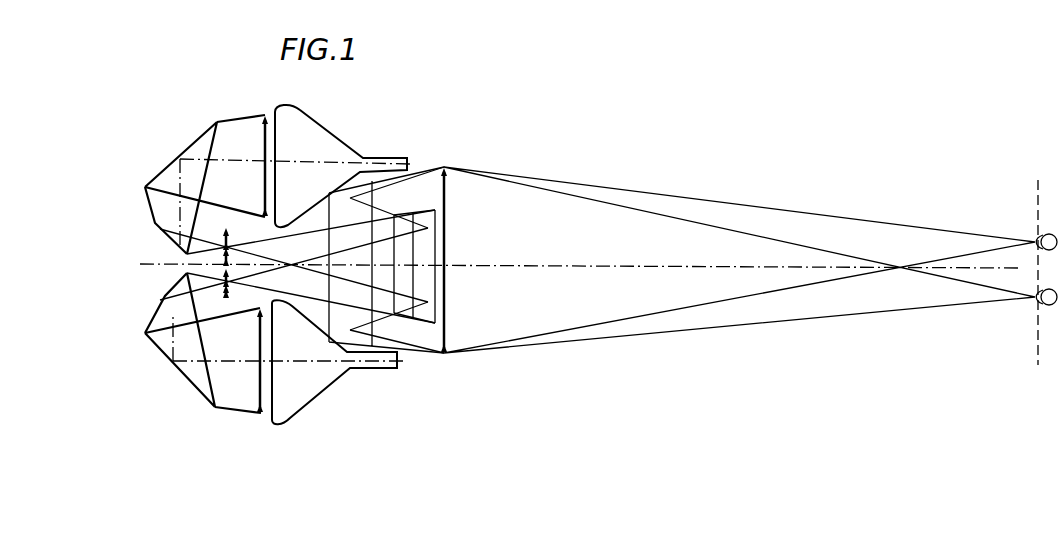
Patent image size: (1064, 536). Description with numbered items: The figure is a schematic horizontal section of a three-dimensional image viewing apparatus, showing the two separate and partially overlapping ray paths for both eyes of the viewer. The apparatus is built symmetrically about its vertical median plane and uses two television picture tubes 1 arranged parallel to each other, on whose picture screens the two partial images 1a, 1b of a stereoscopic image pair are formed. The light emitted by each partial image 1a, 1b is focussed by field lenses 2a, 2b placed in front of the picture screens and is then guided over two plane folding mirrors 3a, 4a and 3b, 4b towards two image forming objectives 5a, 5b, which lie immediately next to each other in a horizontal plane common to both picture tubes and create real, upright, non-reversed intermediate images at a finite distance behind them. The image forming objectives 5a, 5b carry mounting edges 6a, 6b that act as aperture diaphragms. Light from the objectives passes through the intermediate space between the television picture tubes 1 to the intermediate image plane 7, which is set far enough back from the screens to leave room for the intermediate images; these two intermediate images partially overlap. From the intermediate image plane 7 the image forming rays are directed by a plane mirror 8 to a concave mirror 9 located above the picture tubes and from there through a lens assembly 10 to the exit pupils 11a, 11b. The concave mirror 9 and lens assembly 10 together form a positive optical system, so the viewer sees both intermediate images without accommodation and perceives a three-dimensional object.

The television picture tubes 1 is at (308, 110).
The partial image 1a is at (276, 156).
The partial image 1b is at (272, 345).
The field lens 2a is at (262, 127).
The field lens 2b is at (250, 397).
The plane folding mirror 3a is at (170, 166).
The plane folding mirror 3b is at (152, 352).
The plane folding mirror 4a is at (160, 230).
The plane folding mirror 4b is at (158, 302).
The image forming objective 5a is at (222, 236).
The mounting edge 6a is at (159, 267).
The image forming objective 5b is at (222, 277).
The mounting edge 6b is at (159, 302).
The intermediate image plane 7 is at (393, 277).
The plane mirror 8 is at (438, 247).
The concave mirror 9 is at (330, 187).
The lens assembly 10 is at (445, 327).
The exit pupil 11a is at (1032, 300).
The exit pupil 11b is at (1032, 238).